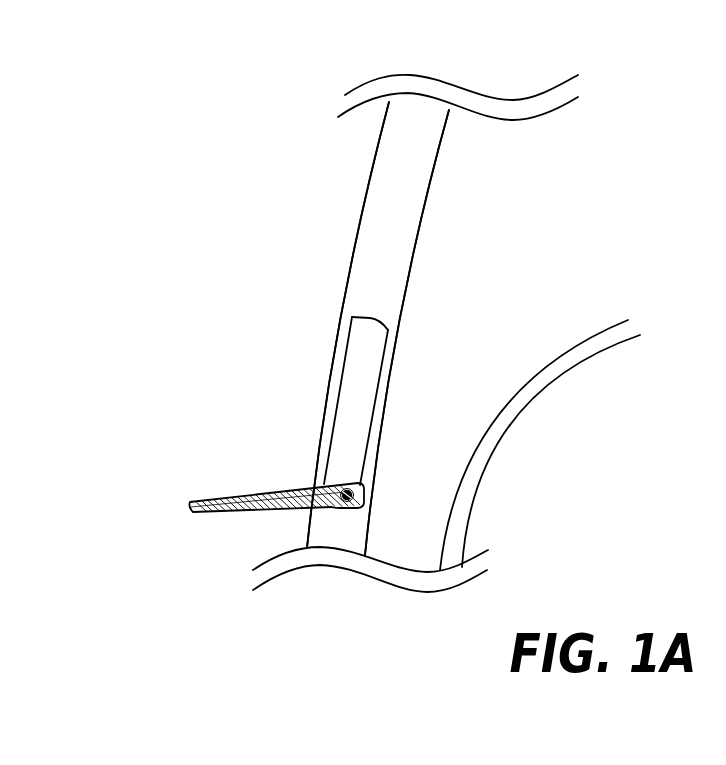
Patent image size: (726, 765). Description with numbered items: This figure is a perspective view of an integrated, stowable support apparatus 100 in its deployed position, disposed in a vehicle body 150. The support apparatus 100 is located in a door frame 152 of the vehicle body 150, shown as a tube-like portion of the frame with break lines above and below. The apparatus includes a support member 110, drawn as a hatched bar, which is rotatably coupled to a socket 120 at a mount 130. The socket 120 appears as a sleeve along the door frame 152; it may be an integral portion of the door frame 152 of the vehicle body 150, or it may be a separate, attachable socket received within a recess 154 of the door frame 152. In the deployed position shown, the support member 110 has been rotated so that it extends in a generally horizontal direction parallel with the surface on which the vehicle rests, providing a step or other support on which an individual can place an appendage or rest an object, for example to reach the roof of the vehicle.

The support apparatus 100 is at (267, 450).
The support member 110 is at (227, 488).
The socket 120 is at (368, 318).
The mount 130 is at (364, 490).
The vehicle body 150 is at (432, 225).
The door frame 152 is at (383, 298).
The recess 154 is at (397, 330).